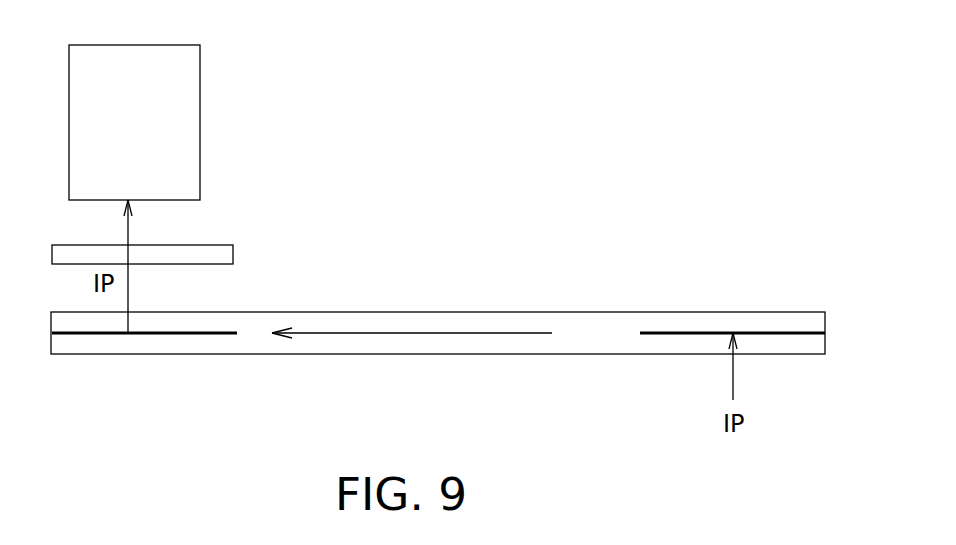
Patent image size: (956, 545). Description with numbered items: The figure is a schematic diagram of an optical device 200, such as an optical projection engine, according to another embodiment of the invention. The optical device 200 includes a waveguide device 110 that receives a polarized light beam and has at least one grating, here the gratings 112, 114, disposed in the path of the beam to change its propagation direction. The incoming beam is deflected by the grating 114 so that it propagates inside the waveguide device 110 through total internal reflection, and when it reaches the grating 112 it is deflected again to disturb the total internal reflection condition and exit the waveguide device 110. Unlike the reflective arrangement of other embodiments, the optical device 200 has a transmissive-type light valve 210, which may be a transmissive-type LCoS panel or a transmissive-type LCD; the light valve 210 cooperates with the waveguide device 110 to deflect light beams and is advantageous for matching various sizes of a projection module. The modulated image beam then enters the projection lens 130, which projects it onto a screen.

The optical device 200 is at (653, 62).
The projection lens 130 is at (200, 138).
The transmissive-type light valve 210 is at (235, 210).
The waveguide device 110 is at (412, 307).
The grating 112 is at (203, 332).
The grating 114 is at (700, 332).